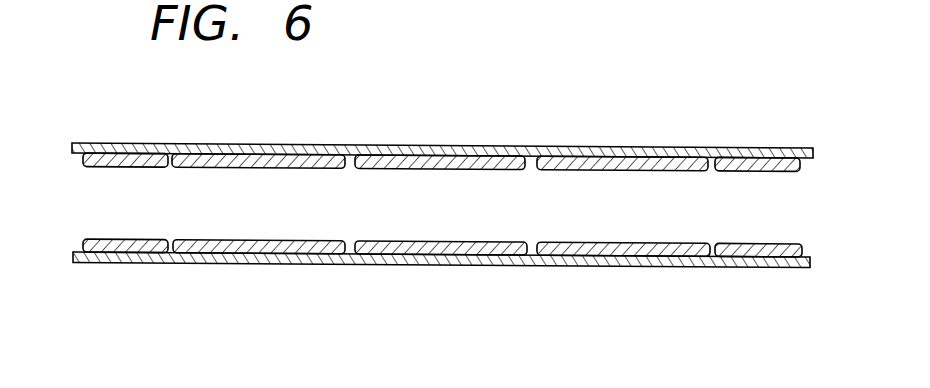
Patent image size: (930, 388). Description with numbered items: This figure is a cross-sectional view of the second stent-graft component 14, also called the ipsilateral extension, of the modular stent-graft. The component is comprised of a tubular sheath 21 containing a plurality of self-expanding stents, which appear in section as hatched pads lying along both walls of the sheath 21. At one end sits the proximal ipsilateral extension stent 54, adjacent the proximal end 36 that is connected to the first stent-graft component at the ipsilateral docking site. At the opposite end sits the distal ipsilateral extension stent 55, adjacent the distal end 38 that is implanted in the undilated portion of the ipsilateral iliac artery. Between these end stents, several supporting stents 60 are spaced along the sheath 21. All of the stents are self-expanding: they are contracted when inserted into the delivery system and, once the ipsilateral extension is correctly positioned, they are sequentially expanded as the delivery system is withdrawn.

The distal ipsilateral extension stent 55 is at (139, 152).
The supporting stents 60 is at (260, 153).
The proximal ipsilateral extension stent 54 is at (747, 160).
The second stent-graft component 14 is at (243, 263).
The tubular sheath 21 is at (535, 265).
The distal end 38 is at (75, 198).
The proximal end 36 is at (807, 216).